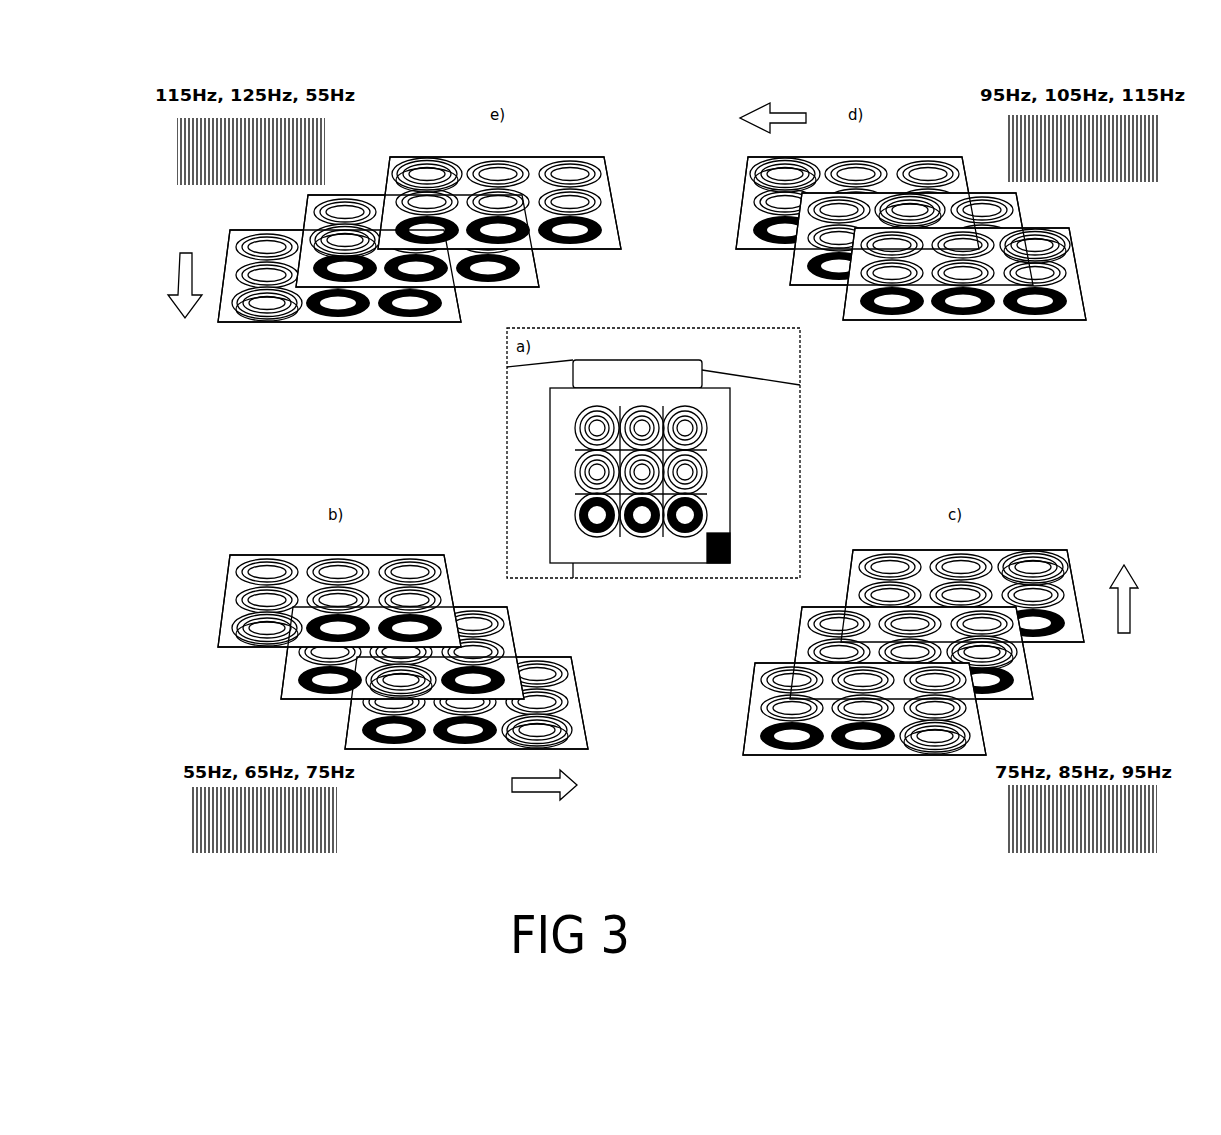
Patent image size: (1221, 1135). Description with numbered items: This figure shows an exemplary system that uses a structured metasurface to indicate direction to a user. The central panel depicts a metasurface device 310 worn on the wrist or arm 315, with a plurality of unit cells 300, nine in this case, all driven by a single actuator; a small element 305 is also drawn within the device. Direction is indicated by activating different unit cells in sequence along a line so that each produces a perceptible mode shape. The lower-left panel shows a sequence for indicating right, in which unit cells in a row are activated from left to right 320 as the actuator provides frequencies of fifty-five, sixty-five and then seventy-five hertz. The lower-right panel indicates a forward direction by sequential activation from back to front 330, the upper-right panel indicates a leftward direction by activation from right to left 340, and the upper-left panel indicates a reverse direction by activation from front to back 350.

The unit cells 300 is at (685, 517).
The sensor / marker 305 is at (727, 563).
The metasurface device 310 is at (572, 446).
The wrist or arm 315 is at (777, 480).
The sequential activation of unit cells from left to right 320 is at (540, 728).
The sequential activation of unit cells from back to front 330 is at (940, 730).
The activation of unit cells from right to left 340 is at (1033, 243).
The activation of unit cells from front to back 350 is at (267, 300).